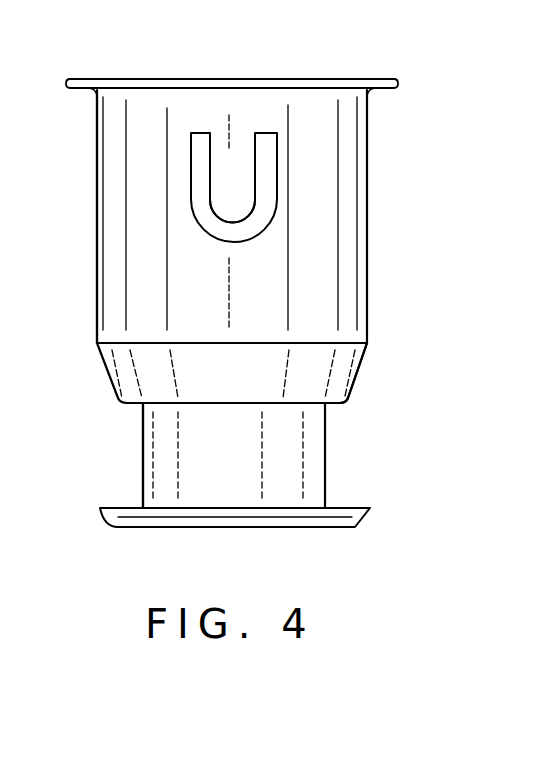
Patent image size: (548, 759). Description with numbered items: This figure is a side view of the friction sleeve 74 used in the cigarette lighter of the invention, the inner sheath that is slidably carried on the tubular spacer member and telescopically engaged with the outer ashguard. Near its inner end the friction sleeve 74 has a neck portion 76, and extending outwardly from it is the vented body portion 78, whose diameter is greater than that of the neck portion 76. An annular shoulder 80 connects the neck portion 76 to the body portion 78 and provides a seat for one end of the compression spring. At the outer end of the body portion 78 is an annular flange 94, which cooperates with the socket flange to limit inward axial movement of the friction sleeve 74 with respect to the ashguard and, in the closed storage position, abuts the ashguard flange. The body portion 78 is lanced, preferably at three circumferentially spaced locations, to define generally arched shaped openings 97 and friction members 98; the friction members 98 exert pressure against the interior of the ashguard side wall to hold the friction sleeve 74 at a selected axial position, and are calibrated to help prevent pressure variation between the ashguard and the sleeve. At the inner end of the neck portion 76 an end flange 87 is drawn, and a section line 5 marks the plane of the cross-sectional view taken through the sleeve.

The friction sleeve 74 is at (384, 216).
The annular flange 94 is at (386, 80).
The body portion 78 is at (100, 163).
The arched shaped openings 97 is at (265, 160).
The friction members 98 is at (220, 189).
The annular shoulder 80 is at (347, 399).
The neck portion 76 is at (150, 446).
The base flange 87 is at (370, 518).
The section line 5- 5 is at (232, 105).